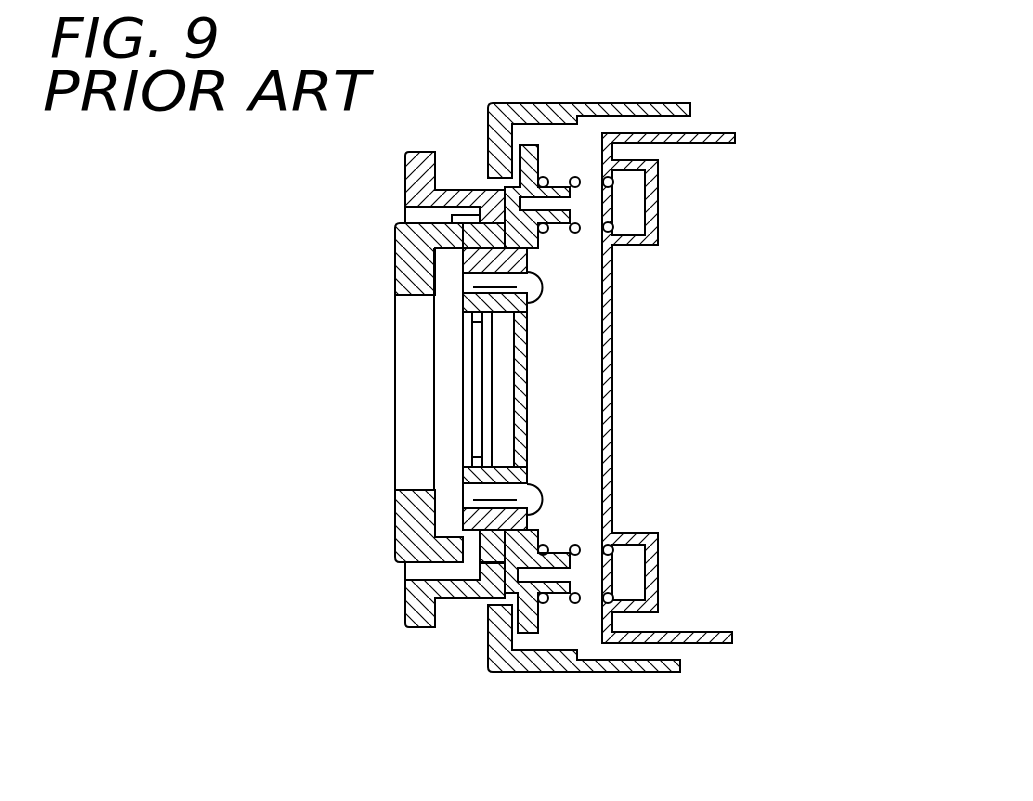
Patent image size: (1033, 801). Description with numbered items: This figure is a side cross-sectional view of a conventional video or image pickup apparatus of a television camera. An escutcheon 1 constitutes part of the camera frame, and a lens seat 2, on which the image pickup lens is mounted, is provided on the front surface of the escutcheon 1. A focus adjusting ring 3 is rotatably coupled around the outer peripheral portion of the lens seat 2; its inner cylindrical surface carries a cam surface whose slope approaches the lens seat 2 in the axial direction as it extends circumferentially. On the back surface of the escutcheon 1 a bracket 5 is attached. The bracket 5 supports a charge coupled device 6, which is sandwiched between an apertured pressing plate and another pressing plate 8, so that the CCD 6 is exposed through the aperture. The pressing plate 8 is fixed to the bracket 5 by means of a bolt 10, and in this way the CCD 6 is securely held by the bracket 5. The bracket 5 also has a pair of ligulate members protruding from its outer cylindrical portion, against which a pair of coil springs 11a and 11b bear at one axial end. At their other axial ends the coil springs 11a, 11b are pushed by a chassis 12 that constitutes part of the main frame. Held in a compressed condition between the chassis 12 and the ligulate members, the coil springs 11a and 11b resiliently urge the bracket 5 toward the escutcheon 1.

The escutcheon 1 is at (528, 673).
The lens seat 2 is at (397, 520).
The focus adjusting ring 3 is at (420, 150).
The bracket 5 is at (527, 148).
The charge coupled device 6 is at (503, 397).
The pressing plate 8 is at (527, 352).
The bolt 10 is at (540, 292).
The coil spring 11a is at (575, 177).
The coil spring 11b is at (573, 603).
The chassis 12 is at (612, 440).